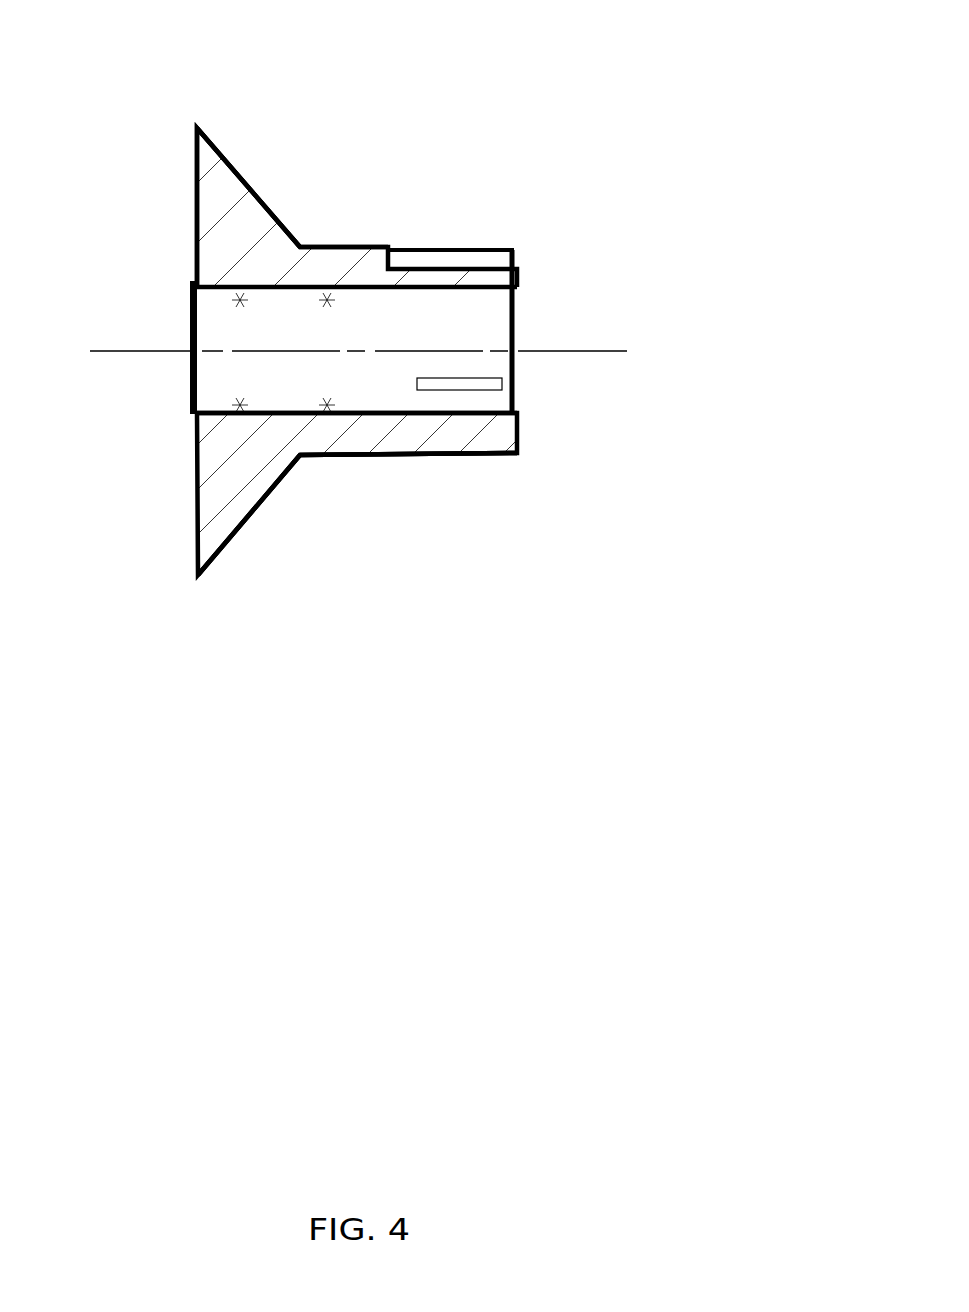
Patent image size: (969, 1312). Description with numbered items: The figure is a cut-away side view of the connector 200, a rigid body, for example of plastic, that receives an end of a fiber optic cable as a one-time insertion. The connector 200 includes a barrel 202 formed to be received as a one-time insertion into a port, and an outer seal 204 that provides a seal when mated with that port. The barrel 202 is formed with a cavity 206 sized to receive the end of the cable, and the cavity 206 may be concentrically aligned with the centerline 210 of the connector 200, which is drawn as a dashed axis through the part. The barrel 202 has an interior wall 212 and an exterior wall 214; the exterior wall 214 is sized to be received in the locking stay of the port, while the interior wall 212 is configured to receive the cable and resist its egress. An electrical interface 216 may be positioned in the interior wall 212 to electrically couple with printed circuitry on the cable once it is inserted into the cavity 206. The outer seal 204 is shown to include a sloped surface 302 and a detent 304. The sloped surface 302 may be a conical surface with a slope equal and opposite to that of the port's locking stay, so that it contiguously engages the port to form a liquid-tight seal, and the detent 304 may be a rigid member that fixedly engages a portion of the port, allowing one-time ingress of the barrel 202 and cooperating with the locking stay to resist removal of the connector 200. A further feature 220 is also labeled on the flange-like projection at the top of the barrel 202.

The connector 200 is at (468, 92).
The barrel 202 is at (486, 500).
The outer seal 204 is at (256, 74).
The cavity 206 is at (551, 382).
The centerline 210 is at (145, 345).
The interior wall 212 is at (463, 290).
The exterior wall 214 is at (393, 458).
The electrical interface 216 is at (488, 385).
The flange 220 is at (453, 263).
The sloped surface 302 is at (305, 498).
The detent 304 is at (198, 398).